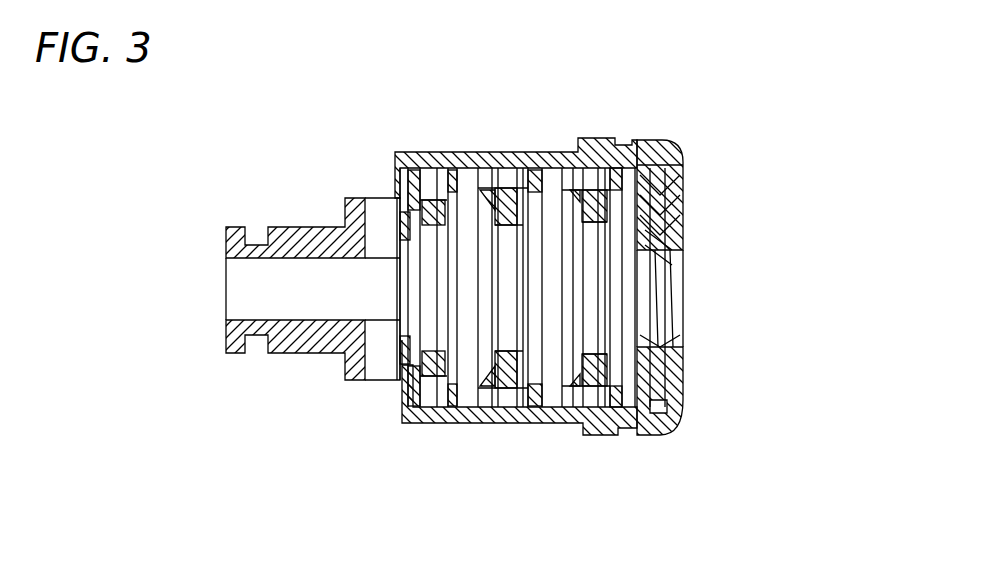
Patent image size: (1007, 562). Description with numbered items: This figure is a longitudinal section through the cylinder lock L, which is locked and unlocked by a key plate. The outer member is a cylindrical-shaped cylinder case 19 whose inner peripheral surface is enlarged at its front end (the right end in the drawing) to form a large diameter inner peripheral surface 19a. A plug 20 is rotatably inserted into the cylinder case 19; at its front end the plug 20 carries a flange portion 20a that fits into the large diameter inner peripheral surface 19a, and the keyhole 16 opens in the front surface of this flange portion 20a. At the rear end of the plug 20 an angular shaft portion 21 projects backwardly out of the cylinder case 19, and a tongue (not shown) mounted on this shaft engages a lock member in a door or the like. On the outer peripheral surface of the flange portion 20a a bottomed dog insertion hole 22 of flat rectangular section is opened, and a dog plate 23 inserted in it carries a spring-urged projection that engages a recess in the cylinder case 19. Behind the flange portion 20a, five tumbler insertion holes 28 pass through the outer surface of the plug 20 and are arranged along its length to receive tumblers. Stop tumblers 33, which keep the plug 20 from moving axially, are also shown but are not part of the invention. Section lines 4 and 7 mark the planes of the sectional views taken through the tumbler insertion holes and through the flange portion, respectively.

The cylinder lock L is at (355, 155).
The keyhole 16 is at (683, 312).
The cylinder case 19 is at (672, 143).
The large diameter inner peripheral surface 19a is at (683, 168).
The plug 20 is at (585, 195).
The flange portion 20a is at (683, 383).
The angular shaft portion 21 is at (297, 230).
The dog insertion hole 22 is at (683, 350).
The dog plate 23 is at (650, 243).
The tumbler insertion holes 28 is at (712, 463).
The stop tumblers 33 is at (403, 393).
The section line 4— 4 is at (620, 127).
The section line 7— 7 is at (648, 92).